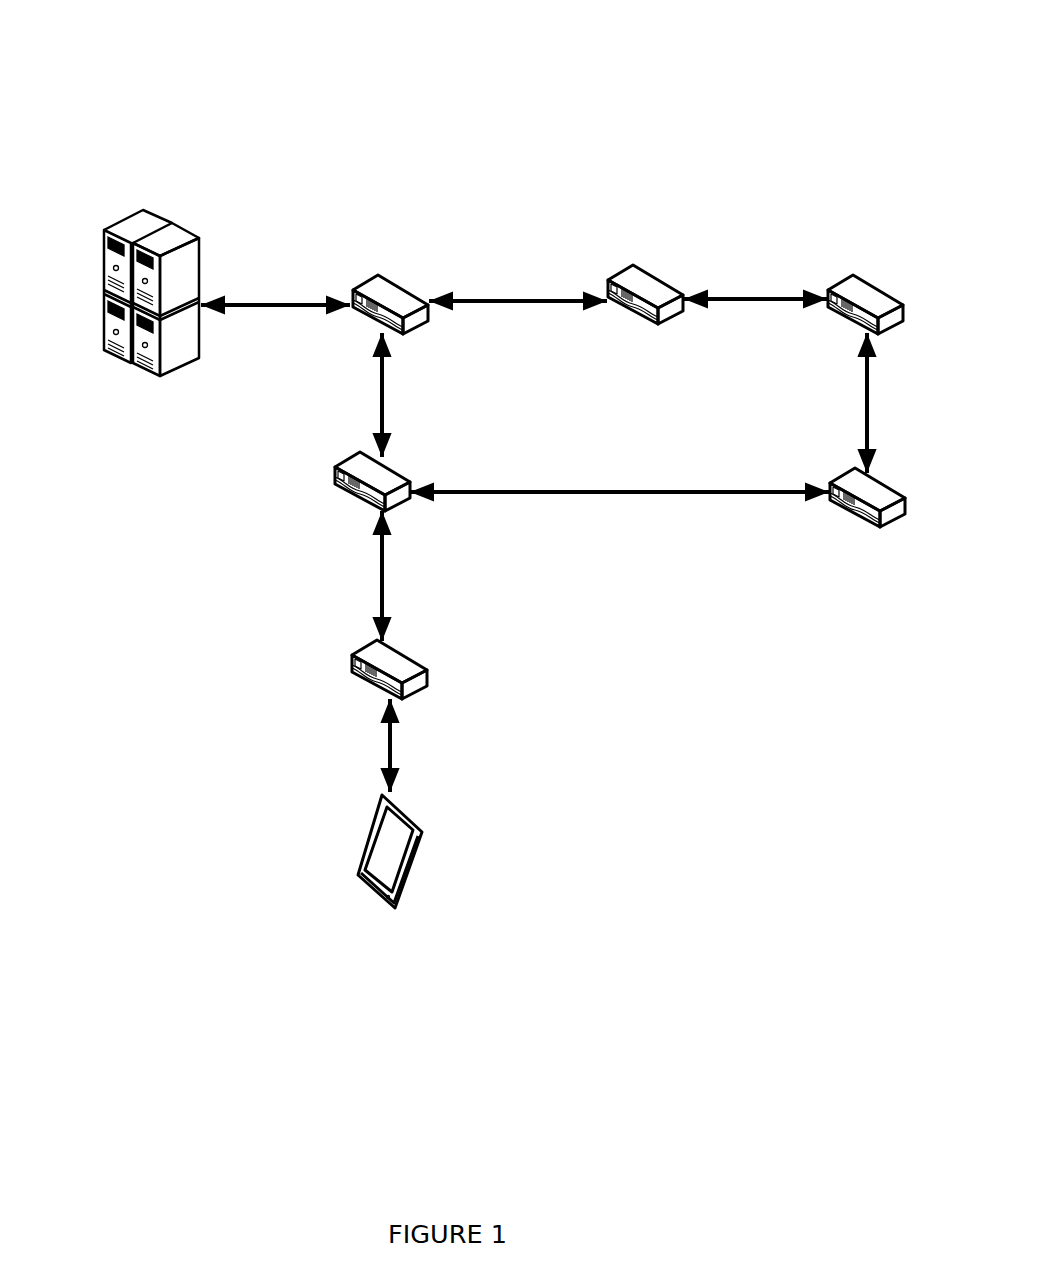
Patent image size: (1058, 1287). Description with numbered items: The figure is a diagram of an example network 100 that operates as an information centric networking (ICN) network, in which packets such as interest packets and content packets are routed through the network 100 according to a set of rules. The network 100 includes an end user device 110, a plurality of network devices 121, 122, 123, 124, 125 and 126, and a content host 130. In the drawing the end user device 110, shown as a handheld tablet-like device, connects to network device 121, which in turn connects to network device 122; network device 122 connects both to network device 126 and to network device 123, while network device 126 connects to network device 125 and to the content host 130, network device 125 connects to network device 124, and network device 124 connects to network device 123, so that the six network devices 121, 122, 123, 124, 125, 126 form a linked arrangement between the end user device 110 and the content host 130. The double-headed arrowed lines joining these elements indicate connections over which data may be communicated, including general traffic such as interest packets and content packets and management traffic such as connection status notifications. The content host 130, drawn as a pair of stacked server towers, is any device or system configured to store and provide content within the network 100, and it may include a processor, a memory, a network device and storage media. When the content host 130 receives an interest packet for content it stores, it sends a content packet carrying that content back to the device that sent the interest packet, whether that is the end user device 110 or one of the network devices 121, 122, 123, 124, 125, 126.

The network 100 is at (101, 55).
The end user device 110 is at (392, 910).
The network device 121 is at (354, 669).
The network device 122 is at (337, 484).
The network device 123 is at (848, 518).
The network device 124 is at (842, 318).
The network device 125 is at (627, 313).
The network device 126 is at (366, 321).
The content host 130 is at (201, 236).